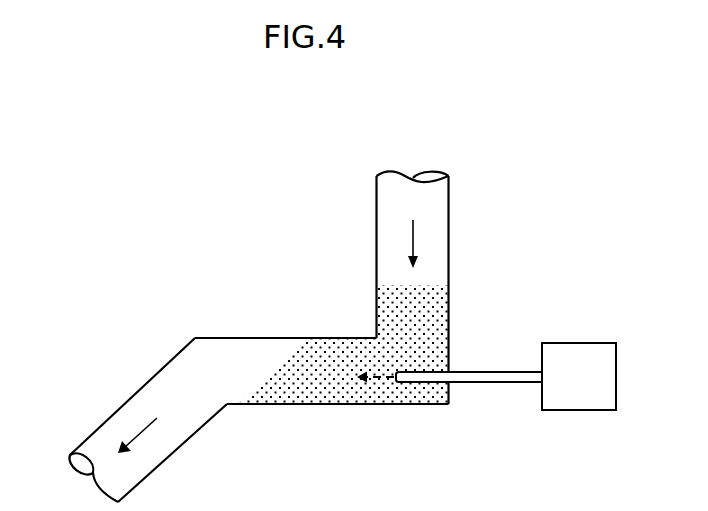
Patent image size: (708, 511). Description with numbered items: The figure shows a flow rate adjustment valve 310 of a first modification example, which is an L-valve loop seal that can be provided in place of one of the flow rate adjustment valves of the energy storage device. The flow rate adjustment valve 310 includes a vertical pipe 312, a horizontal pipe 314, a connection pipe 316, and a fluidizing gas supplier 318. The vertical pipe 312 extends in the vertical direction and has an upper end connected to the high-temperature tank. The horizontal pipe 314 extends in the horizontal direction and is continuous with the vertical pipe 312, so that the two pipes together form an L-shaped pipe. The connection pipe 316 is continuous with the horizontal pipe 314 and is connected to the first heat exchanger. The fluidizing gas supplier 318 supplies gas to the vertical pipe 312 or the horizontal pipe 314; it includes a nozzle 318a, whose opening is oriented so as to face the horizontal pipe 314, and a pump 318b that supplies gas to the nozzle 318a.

The flow rate adjustment valve 310 is at (256, 108).
The vertical pipe 312 is at (449, 222).
The horizontal pipe 314 is at (256, 337).
The connection pipe 316 is at (132, 395).
The fluidizing gas supplier 318 is at (615, 286).
The nozzle 318a is at (484, 385).
The pump 318b is at (578, 412).